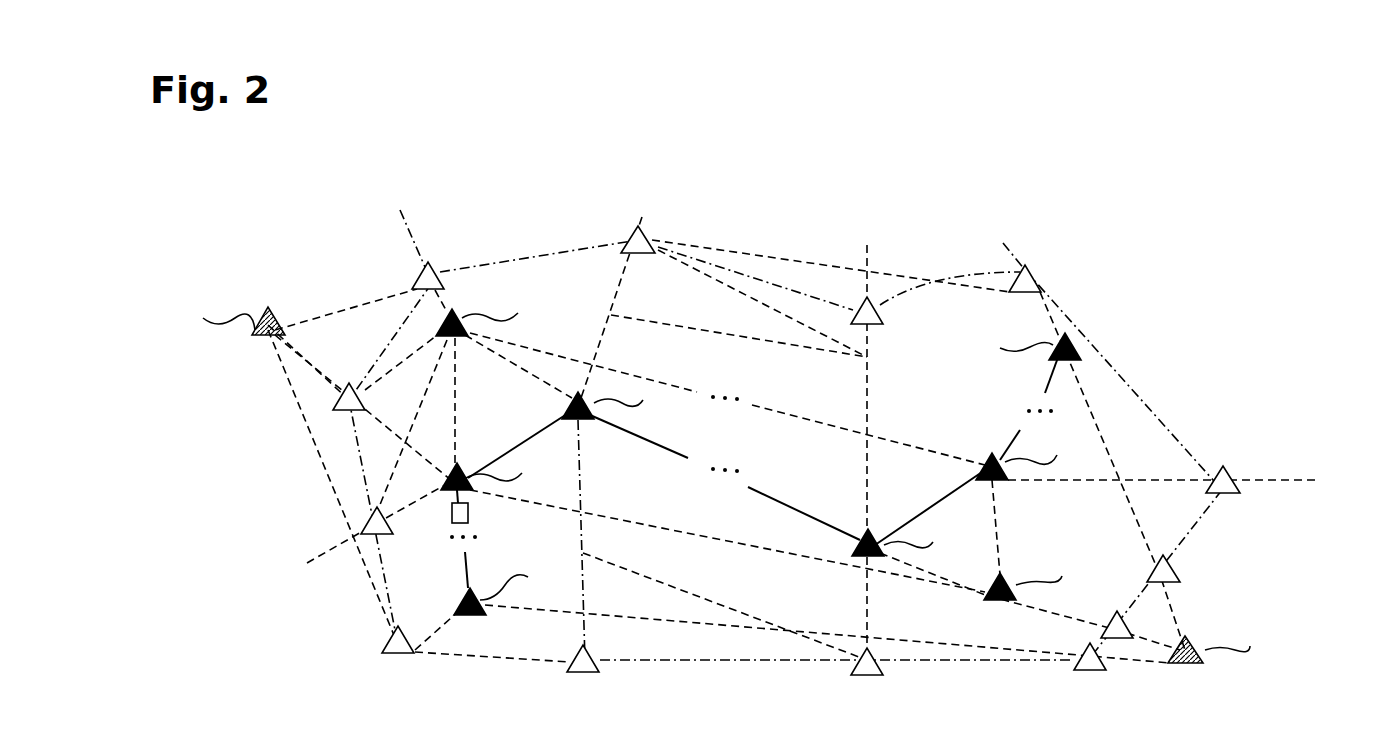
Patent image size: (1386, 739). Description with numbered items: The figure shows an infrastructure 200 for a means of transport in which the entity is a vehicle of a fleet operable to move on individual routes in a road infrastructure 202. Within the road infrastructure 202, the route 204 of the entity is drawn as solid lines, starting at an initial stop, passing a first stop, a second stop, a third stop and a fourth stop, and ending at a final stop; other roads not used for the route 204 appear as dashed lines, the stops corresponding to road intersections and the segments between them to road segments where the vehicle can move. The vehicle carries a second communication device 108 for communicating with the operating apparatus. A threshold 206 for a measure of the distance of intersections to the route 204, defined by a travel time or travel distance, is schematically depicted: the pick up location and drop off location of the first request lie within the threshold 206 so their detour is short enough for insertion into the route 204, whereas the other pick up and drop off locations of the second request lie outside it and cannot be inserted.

The infrastructure 200 is at (1160, 190).
The road infrastructure 202 is at (767, 404).
The route 204 is at (688, 461).
The threshold 206 is at (1150, 407).
The second communication device 108 is at (470, 516).